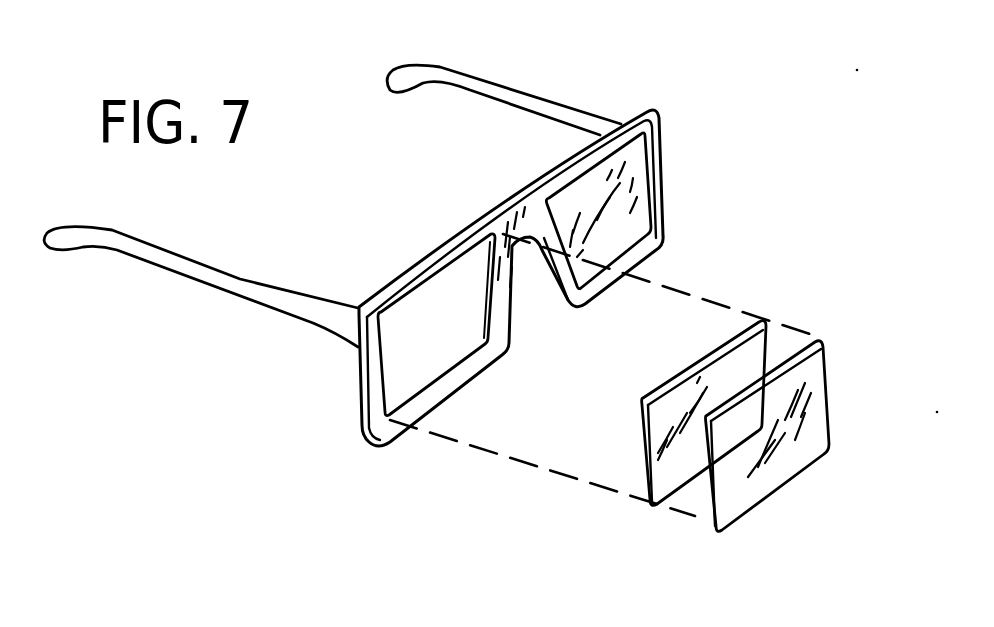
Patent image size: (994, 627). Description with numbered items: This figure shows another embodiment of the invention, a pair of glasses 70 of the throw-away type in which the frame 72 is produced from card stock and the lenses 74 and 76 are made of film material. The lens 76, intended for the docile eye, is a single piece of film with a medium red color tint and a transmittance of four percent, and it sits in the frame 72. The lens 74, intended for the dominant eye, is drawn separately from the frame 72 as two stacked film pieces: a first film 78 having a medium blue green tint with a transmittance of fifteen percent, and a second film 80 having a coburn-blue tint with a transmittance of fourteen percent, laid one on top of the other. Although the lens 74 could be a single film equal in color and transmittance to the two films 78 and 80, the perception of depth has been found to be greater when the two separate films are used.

The pair of glasses 70 is at (331, 422).
The frame 72 is at (587, 110).
The lens 74 is at (720, 542).
The lens 76 is at (609, 210).
The first film 78 is at (757, 345).
The second film 80 is at (817, 403).